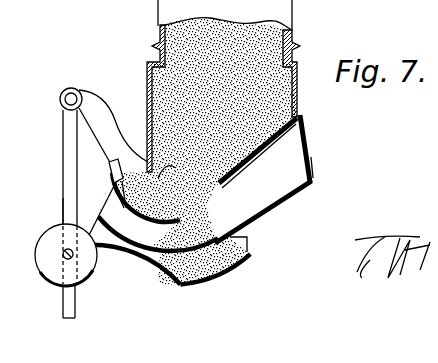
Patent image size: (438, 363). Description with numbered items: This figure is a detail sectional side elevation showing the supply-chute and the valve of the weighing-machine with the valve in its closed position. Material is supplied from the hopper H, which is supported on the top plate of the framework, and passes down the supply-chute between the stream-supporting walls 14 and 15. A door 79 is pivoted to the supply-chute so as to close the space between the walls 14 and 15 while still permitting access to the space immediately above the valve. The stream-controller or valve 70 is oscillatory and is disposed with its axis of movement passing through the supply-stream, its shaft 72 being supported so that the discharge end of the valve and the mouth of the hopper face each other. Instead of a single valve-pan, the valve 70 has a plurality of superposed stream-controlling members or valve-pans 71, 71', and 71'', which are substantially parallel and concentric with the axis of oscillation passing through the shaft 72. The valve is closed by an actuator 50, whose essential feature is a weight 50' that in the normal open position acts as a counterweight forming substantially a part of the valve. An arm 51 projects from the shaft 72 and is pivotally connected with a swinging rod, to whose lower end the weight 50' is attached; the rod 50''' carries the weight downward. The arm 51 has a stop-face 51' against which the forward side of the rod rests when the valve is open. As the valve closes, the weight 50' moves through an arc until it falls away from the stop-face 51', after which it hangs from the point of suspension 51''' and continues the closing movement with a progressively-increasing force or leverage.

The hopper H is at (223, 86).
The stream-supporting wall 14 is at (262, 150).
The stream-supporting wall 15 is at (272, 197).
The door 79 is at (305, 142).
The valve 70 is at (216, 268).
The valve-pan 71 is at (146, 205).
The valve-pan 71' is at (158, 245).
The valve-pan 71'' is at (131, 278).
The shaft 72 is at (176, 170).
The actuator 50 is at (52, 214).
The weight 50' is at (55, 262).
The rod portion 50''' is at (41, 211).
The arm 51 is at (113, 126).
The stop-face 51' is at (88, 177).
The point of suspension 51''' is at (79, 87).